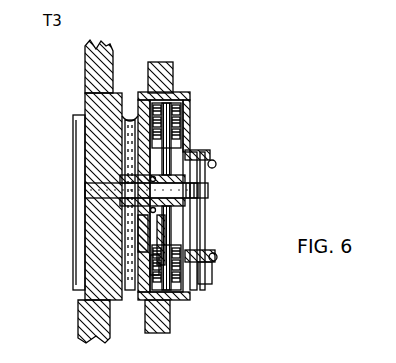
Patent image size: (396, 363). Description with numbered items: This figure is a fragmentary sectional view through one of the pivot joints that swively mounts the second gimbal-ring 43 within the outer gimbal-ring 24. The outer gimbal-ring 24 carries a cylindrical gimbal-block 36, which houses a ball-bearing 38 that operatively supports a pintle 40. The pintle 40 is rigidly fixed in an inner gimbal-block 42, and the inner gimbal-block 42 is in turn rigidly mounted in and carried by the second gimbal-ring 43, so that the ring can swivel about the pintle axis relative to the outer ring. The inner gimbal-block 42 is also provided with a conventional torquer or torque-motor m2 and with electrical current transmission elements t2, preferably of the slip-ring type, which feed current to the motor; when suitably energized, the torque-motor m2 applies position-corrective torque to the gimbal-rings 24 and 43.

The second gimbal-ring 43 is at (87, 47).
The inner gimbal-block 42 is at (100, 105).
The outer gimbal-ring 24 is at (174, 68).
The cylindrical gimbal-block 36 is at (190, 97).
The ball-bearing 38 is at (167, 160).
The pintle 40 is at (95, 191).
The electrical current transmission elements t2 is at (200, 196).
The torque-motor m2 is at (190, 268).